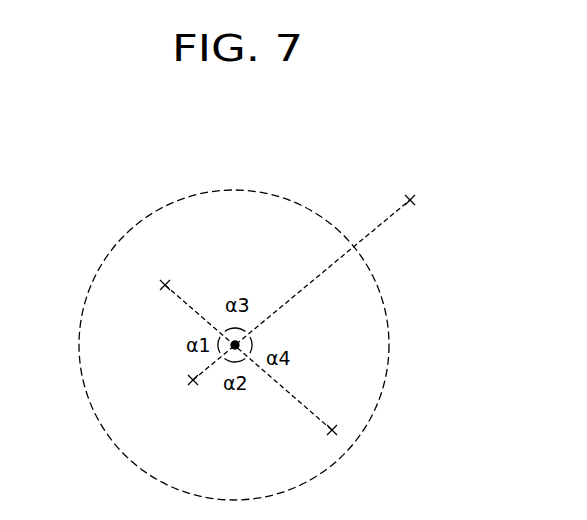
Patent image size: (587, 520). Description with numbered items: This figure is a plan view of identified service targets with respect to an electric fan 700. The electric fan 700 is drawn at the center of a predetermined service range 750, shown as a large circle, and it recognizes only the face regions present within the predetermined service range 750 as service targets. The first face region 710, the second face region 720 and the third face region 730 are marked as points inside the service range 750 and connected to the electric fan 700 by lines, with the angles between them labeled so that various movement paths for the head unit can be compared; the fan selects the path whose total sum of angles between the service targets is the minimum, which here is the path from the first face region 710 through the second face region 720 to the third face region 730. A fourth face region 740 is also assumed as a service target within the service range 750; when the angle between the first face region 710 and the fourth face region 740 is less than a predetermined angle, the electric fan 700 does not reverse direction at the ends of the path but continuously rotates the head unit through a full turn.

The electric fan 700 is at (252, 340).
The first face region 710 is at (167, 282).
The second face region 720 is at (189, 379).
The third face region 730 is at (328, 430).
The fourth face region 740 is at (411, 197).
The predetermined service range 750 is at (245, 188).